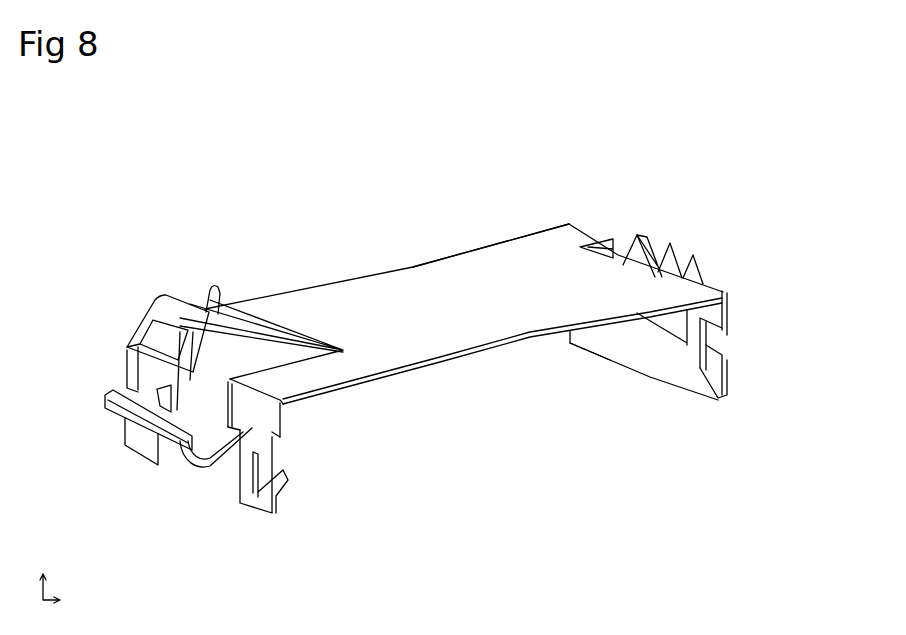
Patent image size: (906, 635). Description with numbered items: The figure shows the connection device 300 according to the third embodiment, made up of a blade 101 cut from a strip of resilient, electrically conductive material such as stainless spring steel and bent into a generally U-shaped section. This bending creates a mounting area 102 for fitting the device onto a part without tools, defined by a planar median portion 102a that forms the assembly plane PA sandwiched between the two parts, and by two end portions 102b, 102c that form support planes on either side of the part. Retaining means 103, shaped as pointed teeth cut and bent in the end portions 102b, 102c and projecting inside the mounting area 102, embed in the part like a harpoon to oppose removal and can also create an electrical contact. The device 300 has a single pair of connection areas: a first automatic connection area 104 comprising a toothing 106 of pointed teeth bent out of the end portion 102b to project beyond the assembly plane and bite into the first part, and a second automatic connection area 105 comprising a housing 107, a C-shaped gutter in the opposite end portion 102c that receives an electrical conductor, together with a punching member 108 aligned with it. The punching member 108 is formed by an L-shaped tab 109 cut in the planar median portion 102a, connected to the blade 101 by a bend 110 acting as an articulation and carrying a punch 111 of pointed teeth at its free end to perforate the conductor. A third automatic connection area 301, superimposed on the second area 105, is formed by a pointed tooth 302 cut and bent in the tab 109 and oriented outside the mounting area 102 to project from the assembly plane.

The connection device 300 is at (450, 232).
The third automatic connection area 301 is at (194, 268).
The pointed tooth 302 is at (222, 290).
The blade 101 is at (415, 266).
The mounting area 102 is at (526, 366).
The planar median portion 102a is at (510, 306).
The end portion 102b is at (687, 361).
The end portion 102c is at (240, 507).
The retaining means 103 is at (137, 397).
The first automatic connection area 104 is at (623, 222).
The second automatic connection area 105 is at (118, 473).
The toothing 106 is at (637, 235).
The housing 107 is at (187, 468).
The punching member 108 is at (160, 293).
The L-shaped tab 109 is at (272, 298).
The bend 110 is at (338, 341).
The punch 111 is at (135, 329).